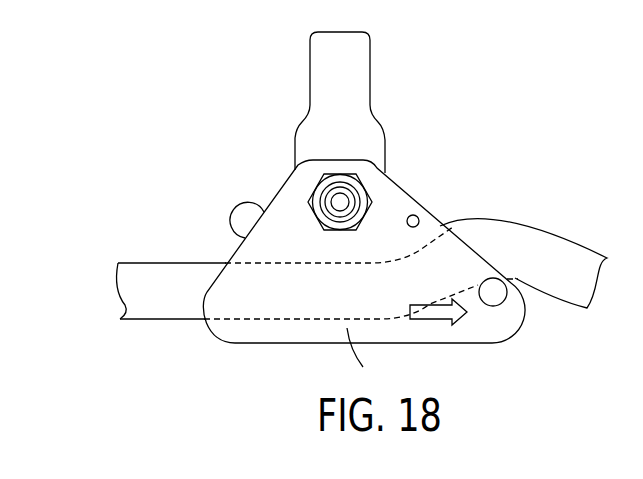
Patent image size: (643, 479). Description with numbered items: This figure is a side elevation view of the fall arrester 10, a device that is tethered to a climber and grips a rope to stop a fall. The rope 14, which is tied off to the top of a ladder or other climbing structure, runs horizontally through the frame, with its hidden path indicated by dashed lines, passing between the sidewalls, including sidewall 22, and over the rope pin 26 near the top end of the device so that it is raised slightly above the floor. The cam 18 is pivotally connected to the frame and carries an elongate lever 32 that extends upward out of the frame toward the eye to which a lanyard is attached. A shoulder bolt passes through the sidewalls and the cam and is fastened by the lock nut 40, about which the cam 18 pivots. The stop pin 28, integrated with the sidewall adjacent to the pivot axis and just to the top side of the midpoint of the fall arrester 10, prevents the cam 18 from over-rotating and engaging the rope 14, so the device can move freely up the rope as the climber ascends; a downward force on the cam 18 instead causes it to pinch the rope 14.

The fall arrester 10 is at (405, 208).
The rope 14 is at (167, 272).
The cam 18 is at (393, 145).
The sidewall 22 is at (485, 328).
The rope pin 26 is at (497, 294).
The stop pin 28 is at (419, 221).
The lever 32 is at (355, 61).
The lock nut 40 is at (352, 203).